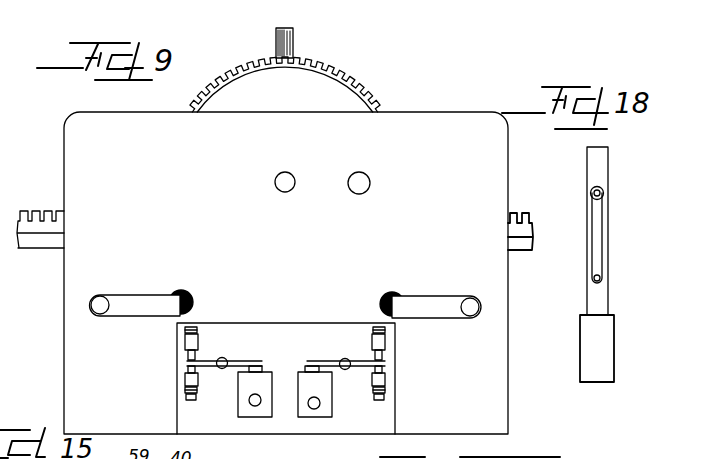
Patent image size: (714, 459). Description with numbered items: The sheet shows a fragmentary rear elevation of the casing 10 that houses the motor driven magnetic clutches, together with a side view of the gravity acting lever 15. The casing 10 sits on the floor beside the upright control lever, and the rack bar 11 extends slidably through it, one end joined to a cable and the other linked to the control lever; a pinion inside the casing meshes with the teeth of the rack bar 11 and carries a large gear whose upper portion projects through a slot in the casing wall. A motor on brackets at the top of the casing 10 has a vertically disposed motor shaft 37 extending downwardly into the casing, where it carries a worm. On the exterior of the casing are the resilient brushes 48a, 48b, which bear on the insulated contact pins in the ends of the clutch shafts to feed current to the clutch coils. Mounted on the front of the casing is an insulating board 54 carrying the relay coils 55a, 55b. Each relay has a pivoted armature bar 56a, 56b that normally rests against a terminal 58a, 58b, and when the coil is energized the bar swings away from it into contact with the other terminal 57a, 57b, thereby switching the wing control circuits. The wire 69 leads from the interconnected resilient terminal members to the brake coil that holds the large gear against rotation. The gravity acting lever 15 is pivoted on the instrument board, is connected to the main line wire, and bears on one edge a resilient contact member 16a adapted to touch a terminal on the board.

In FIG. 9, the casing 10 is at (222, 240).
In FIG. 9, the rack bar 11 is at (523, 243).
In FIG. 9, the motor shaft 37 is at (294, 42).
In FIG. 9, the wire 69 is at (362, 183).
In FIG. 9, the brush 48a is at (147, 306).
In FIG. 9, the brush 48b is at (452, 288).
In FIG. 9, the insulating board 54 is at (282, 335).
In FIG. 9, the relay coil 55a is at (249, 385).
In FIG. 9, the relay coil 55b is at (324, 406).
In FIG. 9, the armature bar 56a is at (243, 353).
In FIG. 9, the armature bar 56b is at (357, 362).
In FIG. 9, the terminal 57a is at (185, 340).
In FIG. 9, the terminal 57b is at (385, 342).
In FIG. 9, the terminal 58a is at (185, 380).
In FIG. 9, the terminal 58b is at (385, 380).
In FIG. 18, the gravity acting lever 15 is at (597, 348).
In FIG. 18, the resilient contact member 16a is at (600, 265).